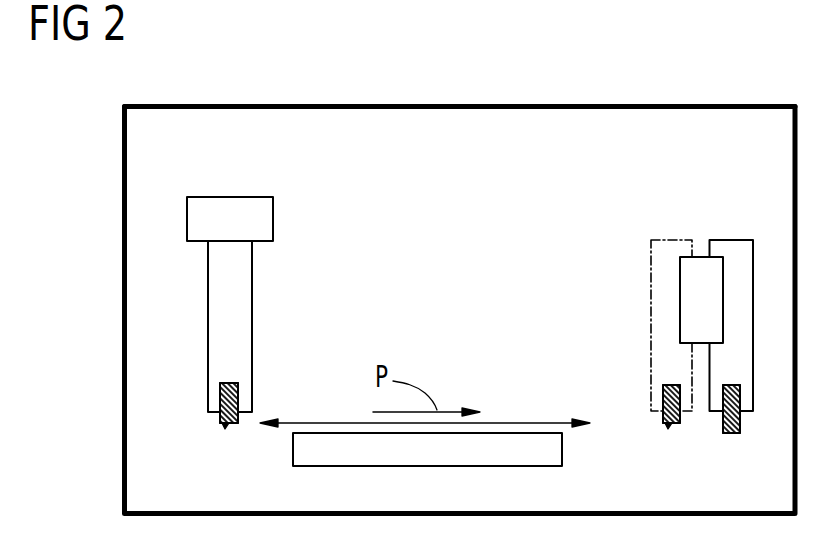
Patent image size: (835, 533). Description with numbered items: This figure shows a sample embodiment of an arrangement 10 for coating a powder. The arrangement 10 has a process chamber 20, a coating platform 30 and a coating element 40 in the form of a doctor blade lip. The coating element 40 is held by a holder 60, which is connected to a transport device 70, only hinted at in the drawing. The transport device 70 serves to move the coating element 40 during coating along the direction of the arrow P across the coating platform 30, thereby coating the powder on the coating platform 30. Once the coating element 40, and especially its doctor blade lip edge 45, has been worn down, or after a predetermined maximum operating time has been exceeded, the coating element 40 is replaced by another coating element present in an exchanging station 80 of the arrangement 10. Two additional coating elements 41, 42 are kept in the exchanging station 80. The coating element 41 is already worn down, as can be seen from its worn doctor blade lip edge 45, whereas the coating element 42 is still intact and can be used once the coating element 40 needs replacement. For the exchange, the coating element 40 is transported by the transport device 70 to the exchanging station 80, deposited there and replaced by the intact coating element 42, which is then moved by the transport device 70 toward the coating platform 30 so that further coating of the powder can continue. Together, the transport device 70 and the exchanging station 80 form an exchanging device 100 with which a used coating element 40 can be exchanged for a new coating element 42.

The arrangement 10 is at (692, 96).
The process chamber 20 is at (433, 104).
The coating platform 30 is at (487, 461).
The coating element 40 is at (220, 400).
The coating element 41 is at (663, 401).
The coating element 42 is at (723, 418).
The doctor blade lip edge 45 is at (222, 430).
The holder 60 is at (246, 315).
The transport device 70 is at (274, 223).
The exchanging station 80 is at (702, 273).
The exchanging device 100 is at (683, 206).